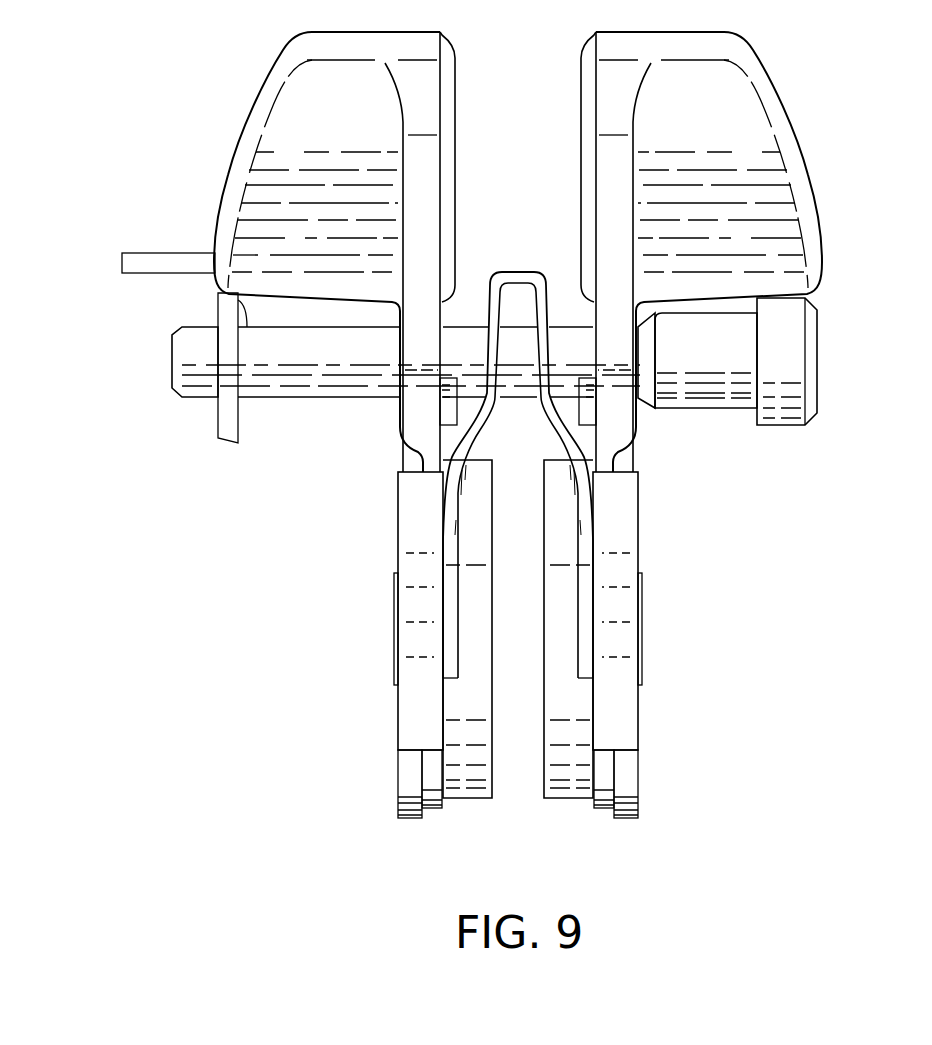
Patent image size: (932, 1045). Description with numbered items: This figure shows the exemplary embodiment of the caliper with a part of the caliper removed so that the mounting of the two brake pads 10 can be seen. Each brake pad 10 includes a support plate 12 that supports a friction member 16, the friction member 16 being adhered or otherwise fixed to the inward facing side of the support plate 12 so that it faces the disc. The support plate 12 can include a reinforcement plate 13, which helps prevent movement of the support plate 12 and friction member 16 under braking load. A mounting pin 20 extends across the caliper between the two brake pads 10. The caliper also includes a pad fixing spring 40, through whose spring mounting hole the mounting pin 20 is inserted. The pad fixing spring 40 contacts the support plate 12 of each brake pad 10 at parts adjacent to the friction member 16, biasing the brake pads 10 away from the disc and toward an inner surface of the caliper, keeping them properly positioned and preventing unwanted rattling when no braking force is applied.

The brake pad 10 is at (210, 116).
The support plate 12 is at (613, 262).
The reinforcement plate 13 is at (420, 703).
The friction member 16 is at (568, 800).
The mounting pin 20 is at (315, 365).
The pad fixing spring 40 is at (557, 440).